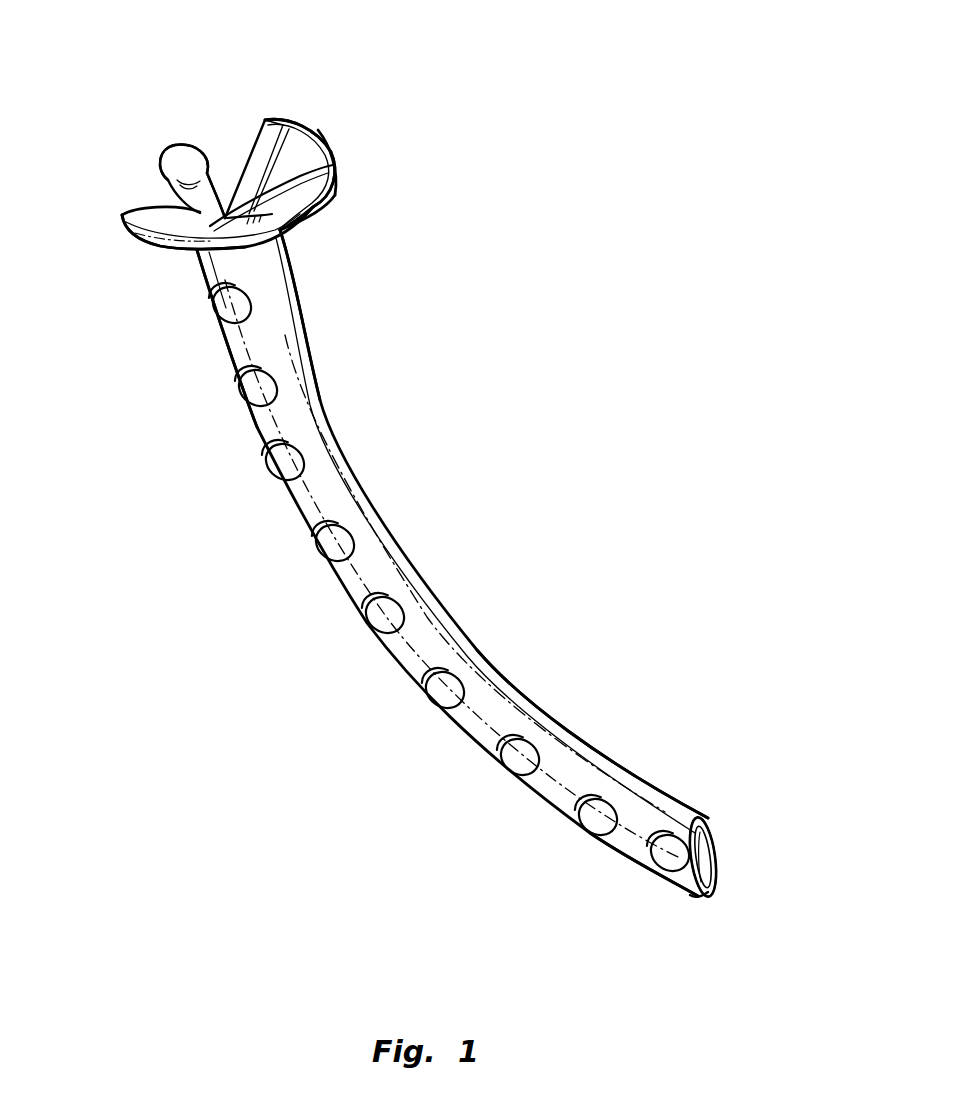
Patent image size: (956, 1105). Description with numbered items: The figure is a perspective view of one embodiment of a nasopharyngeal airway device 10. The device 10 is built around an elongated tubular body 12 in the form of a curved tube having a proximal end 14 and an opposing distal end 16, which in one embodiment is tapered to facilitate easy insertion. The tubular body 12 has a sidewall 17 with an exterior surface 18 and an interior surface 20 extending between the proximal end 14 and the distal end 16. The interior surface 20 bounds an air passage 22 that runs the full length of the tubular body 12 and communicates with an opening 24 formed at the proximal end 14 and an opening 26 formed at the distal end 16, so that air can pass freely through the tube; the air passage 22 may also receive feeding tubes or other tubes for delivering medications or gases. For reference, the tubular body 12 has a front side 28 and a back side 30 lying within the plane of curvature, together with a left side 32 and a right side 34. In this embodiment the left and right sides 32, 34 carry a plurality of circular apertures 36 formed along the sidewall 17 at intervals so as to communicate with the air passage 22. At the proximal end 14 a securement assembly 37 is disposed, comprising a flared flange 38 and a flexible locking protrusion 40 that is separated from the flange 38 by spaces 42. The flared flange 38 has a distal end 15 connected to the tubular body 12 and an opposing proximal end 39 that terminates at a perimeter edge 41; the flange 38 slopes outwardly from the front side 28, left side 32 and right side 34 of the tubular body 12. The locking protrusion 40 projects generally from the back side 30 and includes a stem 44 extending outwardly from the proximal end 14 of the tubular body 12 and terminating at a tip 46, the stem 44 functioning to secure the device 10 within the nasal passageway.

The nasopharyngeal airway device 10 is at (585, 457).
The elongated tubular body 12 is at (387, 533).
The proximal end 14 is at (190, 270).
The distal end of flared flange 15 is at (160, 258).
The distal end 16 is at (740, 848).
The sidewall 17 is at (540, 707).
The exterior surface 18 is at (653, 793).
The interior surface 20 is at (713, 827).
The air passage 22 is at (717, 880).
The opening 24 is at (307, 170).
The opening 26 is at (704, 853).
The front side 28 is at (327, 410).
The back side 30 is at (253, 418).
The left side 32 is at (273, 433).
The right side 34 is at (318, 370).
The apertures 36 is at (443, 695).
The securement assembly 37 is at (323, 207).
The flared flange 38 is at (298, 143).
The proximal end of flared flange 39 is at (299, 106).
The flexible locking protrusion 40 is at (213, 84).
The perimeter edge 41 is at (322, 140).
The spaces 42 is at (160, 193).
The stem 44 is at (228, 180).
The tip 46 is at (170, 157).